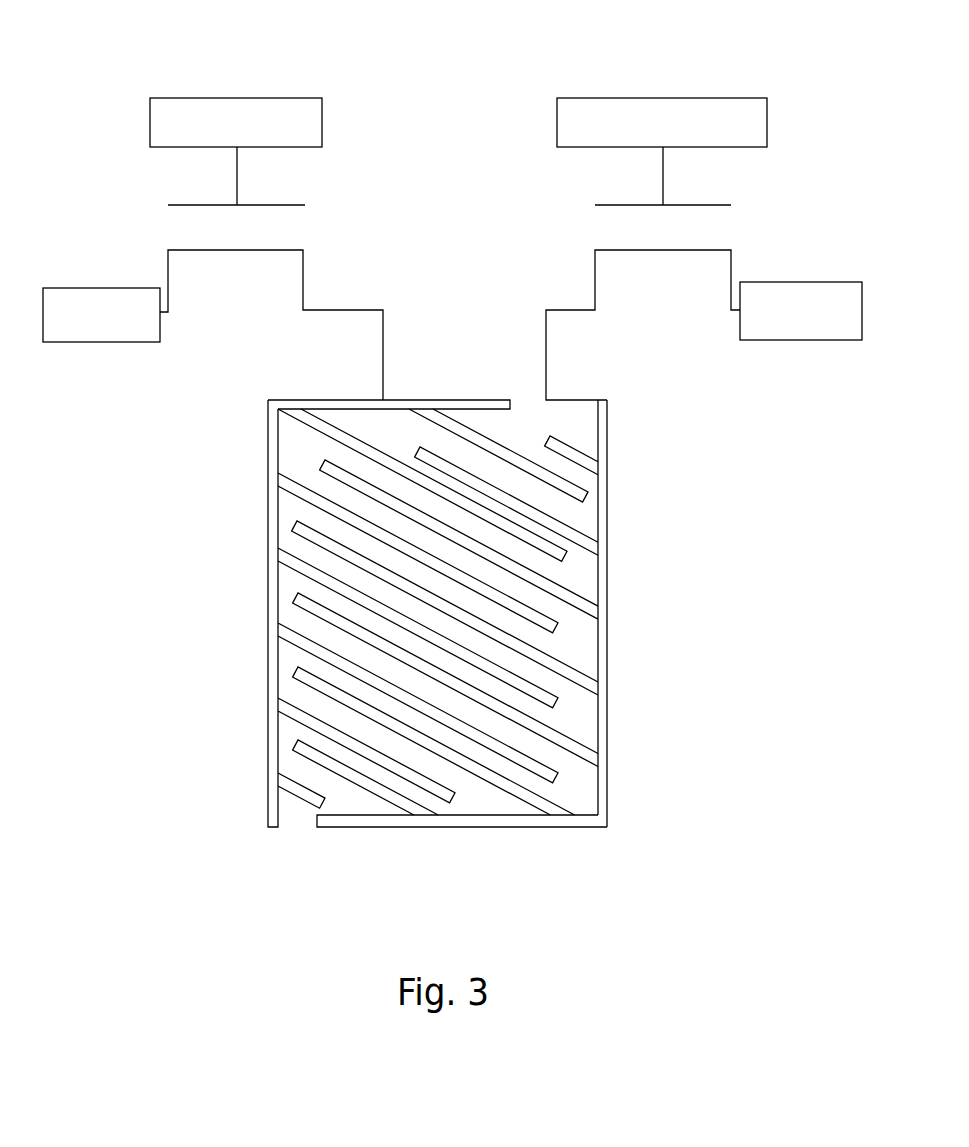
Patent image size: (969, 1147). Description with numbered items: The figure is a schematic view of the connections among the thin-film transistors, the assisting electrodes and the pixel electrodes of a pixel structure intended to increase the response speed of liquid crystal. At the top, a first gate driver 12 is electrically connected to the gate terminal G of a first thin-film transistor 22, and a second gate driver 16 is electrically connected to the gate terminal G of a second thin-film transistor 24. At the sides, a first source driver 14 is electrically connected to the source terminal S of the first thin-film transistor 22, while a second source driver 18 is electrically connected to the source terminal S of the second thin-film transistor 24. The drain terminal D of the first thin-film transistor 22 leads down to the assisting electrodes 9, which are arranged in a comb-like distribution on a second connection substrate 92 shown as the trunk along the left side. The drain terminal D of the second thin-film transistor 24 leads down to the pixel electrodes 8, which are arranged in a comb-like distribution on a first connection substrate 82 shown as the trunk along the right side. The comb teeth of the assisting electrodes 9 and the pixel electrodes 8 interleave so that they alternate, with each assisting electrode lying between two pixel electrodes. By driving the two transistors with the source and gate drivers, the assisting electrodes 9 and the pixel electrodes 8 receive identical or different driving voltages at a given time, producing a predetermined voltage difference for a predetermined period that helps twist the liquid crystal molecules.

The first gate driver 12 is at (235, 98).
The second gate driver 16 is at (663, 97).
The first source driver 14 is at (101, 283).
The second source driver 18 is at (848, 280).
The first thin-film transistor 22 is at (267, 222).
The second thin-film transistor 24 is at (623, 221).
The assisting electrodes 9 is at (387, 613).
The second connection substrate 92 is at (272, 670).
The pixel electrodes 8 is at (495, 613).
The first connection substrate 82 is at (603, 657).